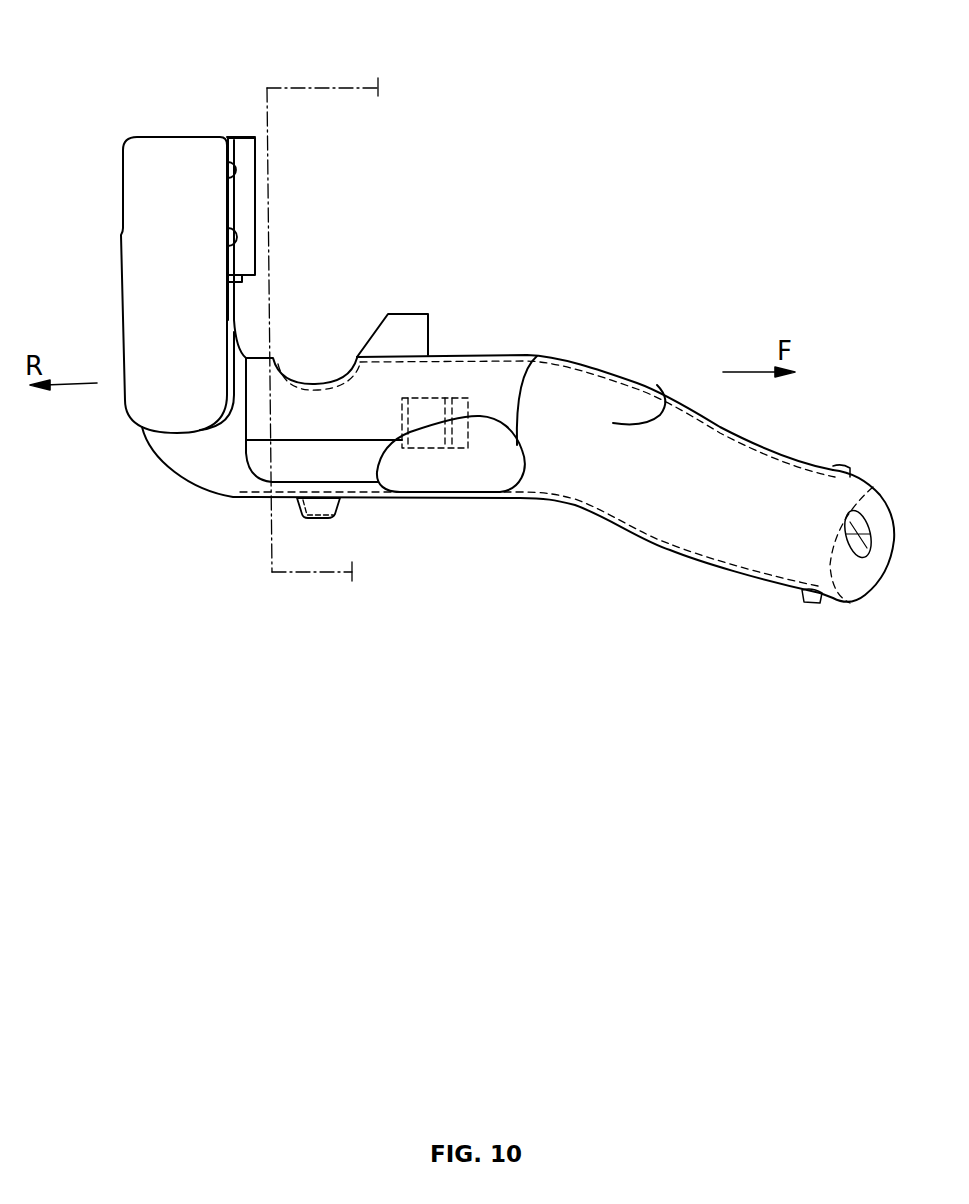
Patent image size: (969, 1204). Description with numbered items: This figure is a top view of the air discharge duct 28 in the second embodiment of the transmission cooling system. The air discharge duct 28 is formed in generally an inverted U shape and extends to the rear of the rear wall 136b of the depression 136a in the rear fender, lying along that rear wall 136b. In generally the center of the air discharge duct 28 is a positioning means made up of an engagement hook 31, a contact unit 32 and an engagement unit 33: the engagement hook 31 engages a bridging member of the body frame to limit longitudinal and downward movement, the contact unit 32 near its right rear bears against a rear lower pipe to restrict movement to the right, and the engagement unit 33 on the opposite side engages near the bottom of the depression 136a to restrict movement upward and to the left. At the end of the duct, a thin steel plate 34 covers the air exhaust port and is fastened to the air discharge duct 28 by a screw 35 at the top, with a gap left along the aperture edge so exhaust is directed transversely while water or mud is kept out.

The air discharge duct 28 is at (600, 523).
The engagement hook 31 is at (440, 452).
The contact unit 32 is at (322, 518).
The engagement unit 33 is at (417, 313).
The plate 34 is at (255, 237).
The screw 35 is at (237, 170).
The depression 136a is at (353, 113).
The rear wall 136b is at (265, 117).